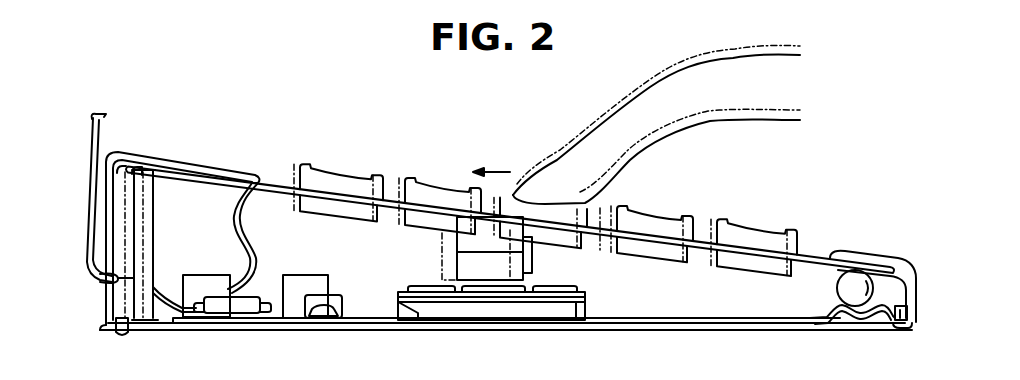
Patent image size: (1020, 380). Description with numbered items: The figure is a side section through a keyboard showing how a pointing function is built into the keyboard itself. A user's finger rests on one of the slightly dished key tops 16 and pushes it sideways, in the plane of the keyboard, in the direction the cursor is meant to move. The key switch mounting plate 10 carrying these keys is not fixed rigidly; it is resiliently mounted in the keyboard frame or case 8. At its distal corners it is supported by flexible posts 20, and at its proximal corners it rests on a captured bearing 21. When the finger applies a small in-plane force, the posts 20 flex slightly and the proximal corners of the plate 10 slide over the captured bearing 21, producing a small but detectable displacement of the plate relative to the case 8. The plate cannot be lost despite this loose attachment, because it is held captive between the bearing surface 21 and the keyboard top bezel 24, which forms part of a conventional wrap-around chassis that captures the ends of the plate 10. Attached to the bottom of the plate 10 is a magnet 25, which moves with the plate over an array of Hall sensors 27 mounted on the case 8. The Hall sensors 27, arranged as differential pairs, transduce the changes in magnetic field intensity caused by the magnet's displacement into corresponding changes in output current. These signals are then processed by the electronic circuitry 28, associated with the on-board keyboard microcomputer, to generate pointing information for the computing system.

The keyboard frame or case 8 is at (625, 330).
The key switch mounting plate 10 is at (818, 251).
The key tops 16 is at (446, 180).
The flexible posts 20 is at (155, 216).
The captured bearing 21 is at (838, 286).
The keyboard top bezel 24 is at (873, 252).
The magnet 25 is at (527, 268).
The array of Hall sensors 27 is at (513, 307).
The electronic circuitry 28 is at (318, 254).